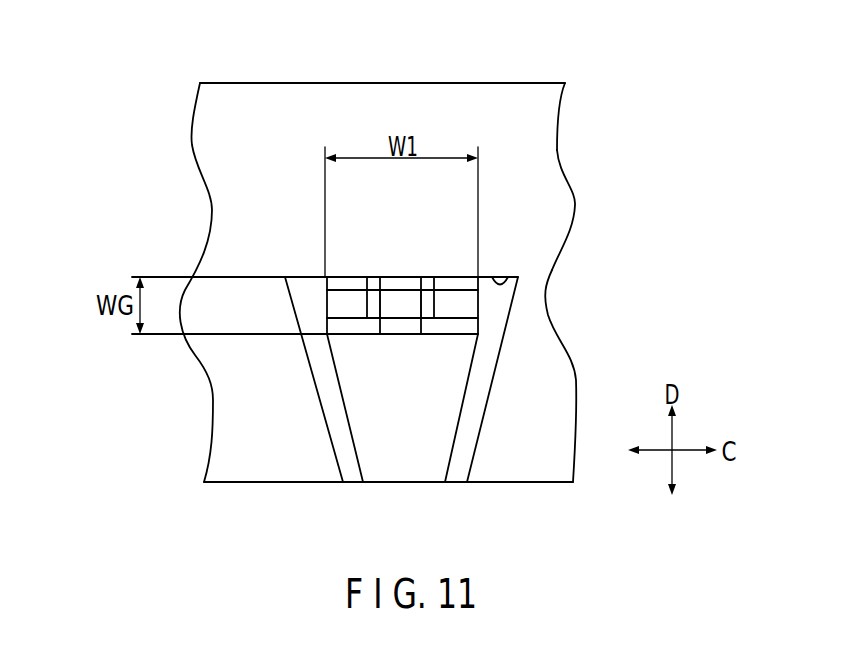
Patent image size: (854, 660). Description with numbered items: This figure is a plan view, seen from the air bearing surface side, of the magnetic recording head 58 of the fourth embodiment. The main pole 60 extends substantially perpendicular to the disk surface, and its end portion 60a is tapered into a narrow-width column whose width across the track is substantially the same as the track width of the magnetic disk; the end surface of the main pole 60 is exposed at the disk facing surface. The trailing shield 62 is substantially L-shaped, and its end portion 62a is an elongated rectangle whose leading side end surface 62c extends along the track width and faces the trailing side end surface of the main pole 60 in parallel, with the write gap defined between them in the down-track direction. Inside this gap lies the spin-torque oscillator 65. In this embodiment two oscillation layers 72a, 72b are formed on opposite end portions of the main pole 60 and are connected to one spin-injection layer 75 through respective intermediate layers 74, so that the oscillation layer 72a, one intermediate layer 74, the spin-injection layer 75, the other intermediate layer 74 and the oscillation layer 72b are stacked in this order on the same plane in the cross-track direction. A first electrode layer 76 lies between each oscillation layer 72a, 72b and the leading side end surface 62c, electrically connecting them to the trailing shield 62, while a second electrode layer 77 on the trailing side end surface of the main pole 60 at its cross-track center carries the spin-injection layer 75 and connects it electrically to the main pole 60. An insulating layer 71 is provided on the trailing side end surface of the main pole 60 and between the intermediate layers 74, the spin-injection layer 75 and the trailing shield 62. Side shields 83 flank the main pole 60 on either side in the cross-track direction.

The magnetic recording head 58 is at (159, 179).
The main pole 60 is at (412, 463).
The end portion of the main pole 60a is at (388, 472).
The trailing shield 62 is at (487, 97).
The end portion of the trailing shield 62a is at (540, 160).
The leading side end surface 62c is at (507, 272).
The spin-torque oscillator 65 is at (366, 352).
The insulating layer 71 is at (398, 302).
The oscillation layer 72a is at (328, 305).
The oscillation layer 72b is at (470, 304).
The intermediate layer 74 is at (375, 296).
The spin-injection layer 75 is at (412, 302).
The first electrode layer 76 is at (343, 283).
The second electrode layer 77 is at (407, 325).
The side shield 83 is at (218, 452).